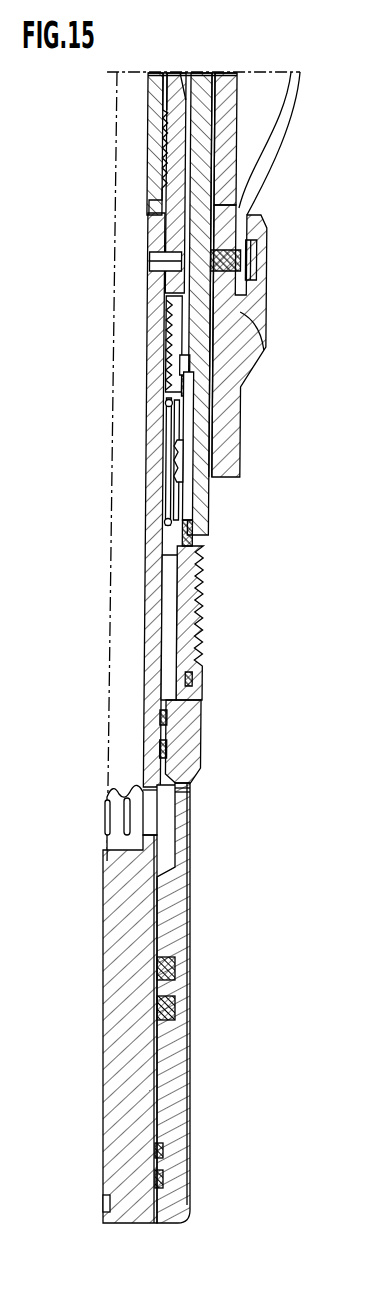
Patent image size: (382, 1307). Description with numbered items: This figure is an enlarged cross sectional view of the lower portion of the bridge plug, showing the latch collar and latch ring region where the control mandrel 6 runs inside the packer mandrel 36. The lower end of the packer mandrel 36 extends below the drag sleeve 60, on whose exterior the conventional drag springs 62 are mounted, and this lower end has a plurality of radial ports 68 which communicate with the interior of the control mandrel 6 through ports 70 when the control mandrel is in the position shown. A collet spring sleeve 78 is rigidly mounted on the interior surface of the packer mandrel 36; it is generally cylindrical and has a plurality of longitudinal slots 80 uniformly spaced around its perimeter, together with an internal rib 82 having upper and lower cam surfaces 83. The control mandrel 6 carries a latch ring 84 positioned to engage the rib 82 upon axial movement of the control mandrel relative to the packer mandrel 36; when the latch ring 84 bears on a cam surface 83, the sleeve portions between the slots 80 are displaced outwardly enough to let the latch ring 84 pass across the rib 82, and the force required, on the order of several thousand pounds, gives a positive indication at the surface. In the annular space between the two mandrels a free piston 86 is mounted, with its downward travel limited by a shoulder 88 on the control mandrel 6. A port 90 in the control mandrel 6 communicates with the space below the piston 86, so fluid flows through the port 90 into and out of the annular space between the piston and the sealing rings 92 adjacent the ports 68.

The control mandrel 6 is at (150, 296).
The packer mandrel 36 is at (197, 313).
The drag sleeve 60 is at (225, 413).
The drag springs 62 is at (285, 136).
The radial ports 68 is at (183, 836).
The ports 70 is at (142, 797).
The collet spring sleeve 78 is at (195, 545).
The longitudinal slots 80 is at (181, 433).
The internal rib 82 is at (167, 465).
The cam surfaces 83 is at (177, 478).
The latch ring 84 is at (172, 325).
The free piston 86 is at (170, 93).
The shoulder 88 is at (178, 108).
The port 90 is at (165, 258).
The sealing rings 92 is at (180, 748).